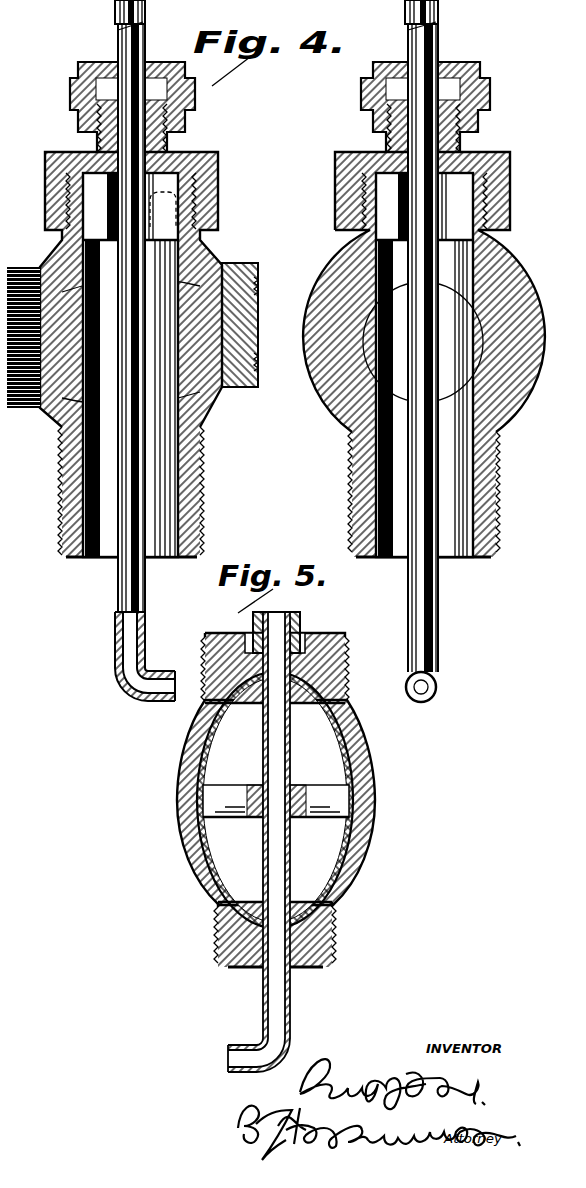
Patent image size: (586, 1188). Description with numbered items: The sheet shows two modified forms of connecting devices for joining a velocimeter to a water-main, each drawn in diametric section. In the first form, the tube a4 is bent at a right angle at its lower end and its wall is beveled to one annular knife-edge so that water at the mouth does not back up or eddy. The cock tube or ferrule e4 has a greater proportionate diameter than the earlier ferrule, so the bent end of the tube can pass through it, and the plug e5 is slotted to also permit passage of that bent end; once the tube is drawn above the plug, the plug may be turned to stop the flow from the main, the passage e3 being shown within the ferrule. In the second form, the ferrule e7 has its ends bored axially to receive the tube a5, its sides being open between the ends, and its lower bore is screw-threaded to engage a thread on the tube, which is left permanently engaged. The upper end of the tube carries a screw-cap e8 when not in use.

In FIG. 4, the inner passage of valve body e3 is at (149, 382).
In FIG. 4, the cock tube or ferrule e4 is at (201, 447).
In FIG. 4, the plug e5 is at (456, 288).
In FIG. 4, the tube a4 is at (449, 638).
In FIG. 5, the ferrule e7 is at (177, 779).
In FIG. 5, the screw-cap e8 is at (286, 628).
In FIG. 5, the tube a5 is at (262, 992).